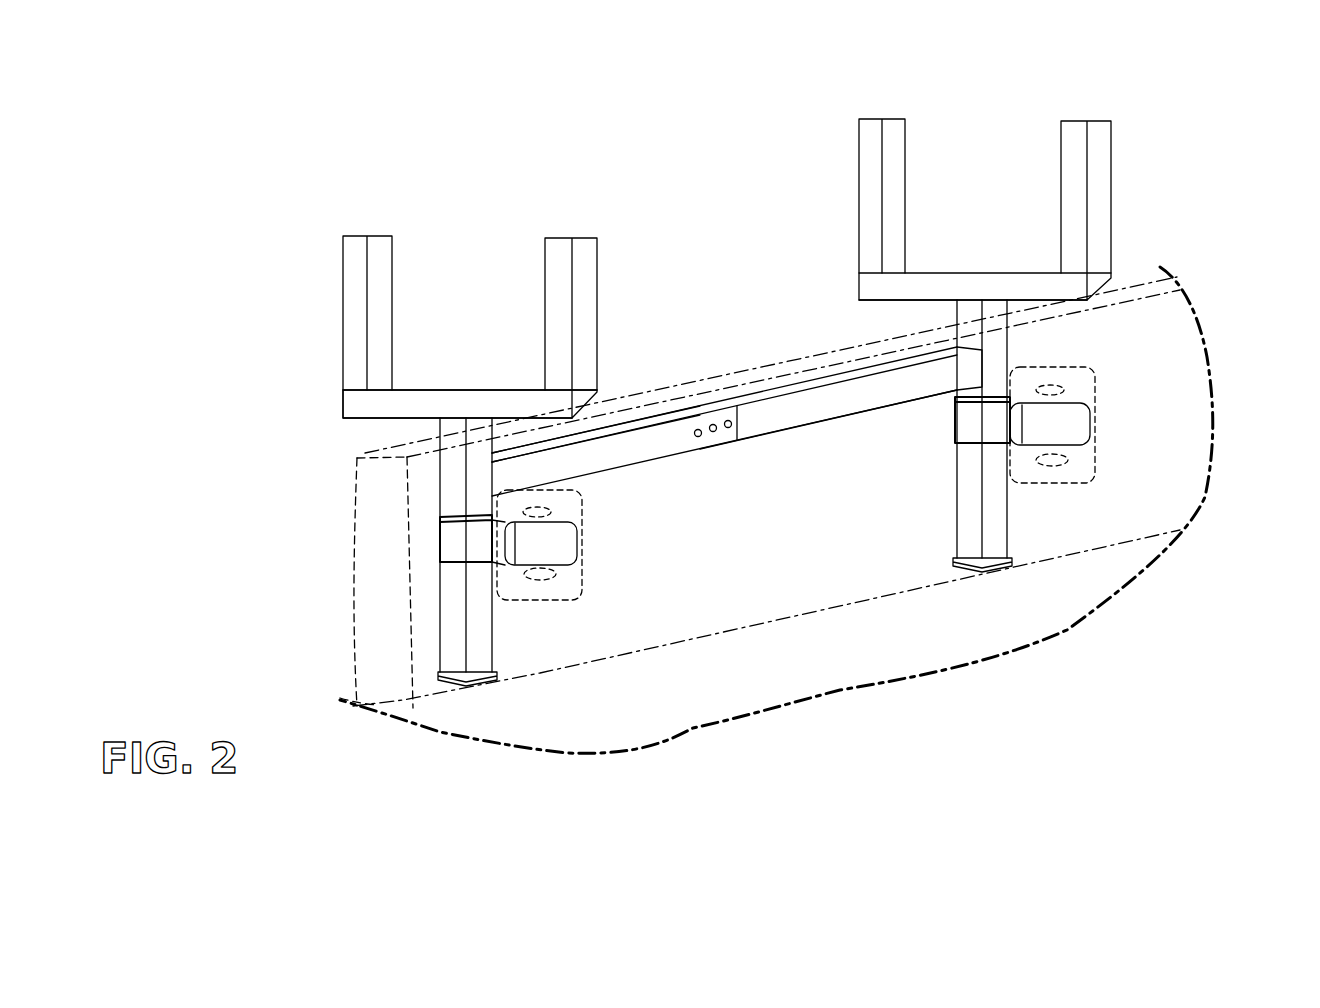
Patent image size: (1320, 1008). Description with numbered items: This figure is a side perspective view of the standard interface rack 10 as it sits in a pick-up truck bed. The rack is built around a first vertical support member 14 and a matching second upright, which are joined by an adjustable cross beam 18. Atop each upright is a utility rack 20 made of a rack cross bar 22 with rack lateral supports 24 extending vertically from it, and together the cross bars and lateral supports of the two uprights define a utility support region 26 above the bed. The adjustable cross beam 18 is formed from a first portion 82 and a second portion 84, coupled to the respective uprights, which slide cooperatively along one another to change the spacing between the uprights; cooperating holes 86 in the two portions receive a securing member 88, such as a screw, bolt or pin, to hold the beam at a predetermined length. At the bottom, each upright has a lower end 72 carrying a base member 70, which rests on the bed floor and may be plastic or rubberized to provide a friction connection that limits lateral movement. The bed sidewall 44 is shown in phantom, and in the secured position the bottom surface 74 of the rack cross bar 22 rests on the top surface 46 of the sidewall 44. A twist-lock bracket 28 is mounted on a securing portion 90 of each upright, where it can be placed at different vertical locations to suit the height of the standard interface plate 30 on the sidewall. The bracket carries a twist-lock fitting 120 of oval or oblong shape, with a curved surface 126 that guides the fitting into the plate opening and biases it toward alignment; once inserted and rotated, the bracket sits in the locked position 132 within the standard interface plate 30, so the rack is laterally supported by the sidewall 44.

The standard interface rack 10 is at (400, 185).
The first vertical support member 14 is at (497, 626).
The adjustable cross beam 18 is at (770, 397).
The utility rack 20 is at (327, 355).
The rack cross bar 22 is at (1060, 291).
The rack lateral support 24 is at (1098, 178).
The utility support region 26 is at (720, 225).
The twist-lock bracket 28 is at (957, 420).
The standard interface plate 30 is at (1085, 375).
The sidewall 44 is at (375, 520).
The top surface 46 is at (405, 452).
The base member 70 is at (997, 568).
The lower end 72 is at (968, 515).
The bottom surface 74 is at (917, 300).
The first portion 82 is at (638, 447).
The second portion 84 is at (862, 390).
The cooperating holes 86 is at (700, 438).
The securing member 88 is at (729, 430).
The securing portion 90 is at (455, 572).
The twist-lock fitting 120 is at (545, 548).
The curved surface 126 is at (1068, 426).
The locked position 132 is at (592, 527).